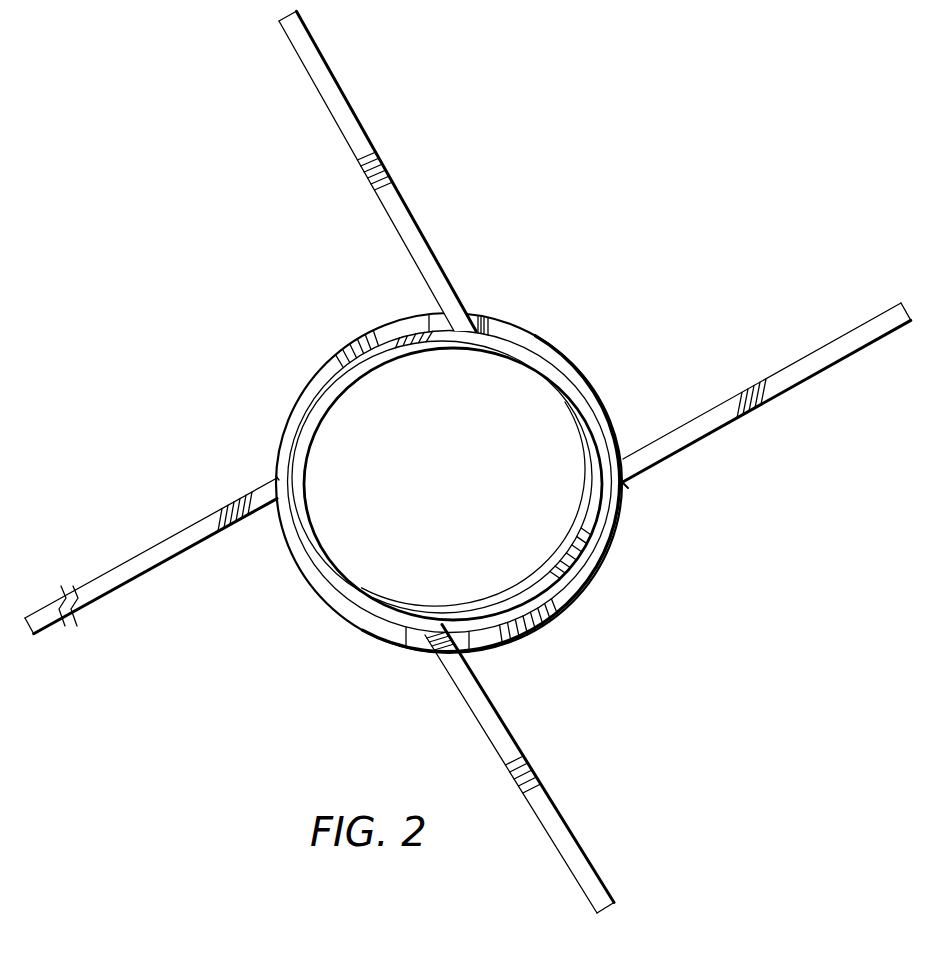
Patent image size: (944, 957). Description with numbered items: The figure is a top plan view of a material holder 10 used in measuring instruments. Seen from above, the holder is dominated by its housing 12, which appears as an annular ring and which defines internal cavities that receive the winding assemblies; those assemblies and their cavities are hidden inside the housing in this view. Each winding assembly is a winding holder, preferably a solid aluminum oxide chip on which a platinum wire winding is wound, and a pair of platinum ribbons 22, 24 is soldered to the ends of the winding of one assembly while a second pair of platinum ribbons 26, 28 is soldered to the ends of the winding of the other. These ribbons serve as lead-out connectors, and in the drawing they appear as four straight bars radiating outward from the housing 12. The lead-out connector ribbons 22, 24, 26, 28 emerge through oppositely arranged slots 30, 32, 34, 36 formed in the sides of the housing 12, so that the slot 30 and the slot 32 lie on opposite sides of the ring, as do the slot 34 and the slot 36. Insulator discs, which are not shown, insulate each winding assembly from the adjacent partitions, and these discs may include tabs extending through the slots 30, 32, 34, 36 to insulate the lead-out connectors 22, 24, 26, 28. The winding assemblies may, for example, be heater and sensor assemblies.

The material holder 10 is at (604, 362).
The housing 12 is at (582, 588).
The platinum ribbon 22 is at (348, 107).
The platinum ribbon 24 is at (532, 763).
The platinum ribbon 26 is at (190, 526).
The platinum ribbon 28 is at (717, 406).
The slot 30 is at (484, 313).
The slot 32 is at (417, 638).
The slot 34 is at (276, 473).
The slot 36 is at (627, 486).